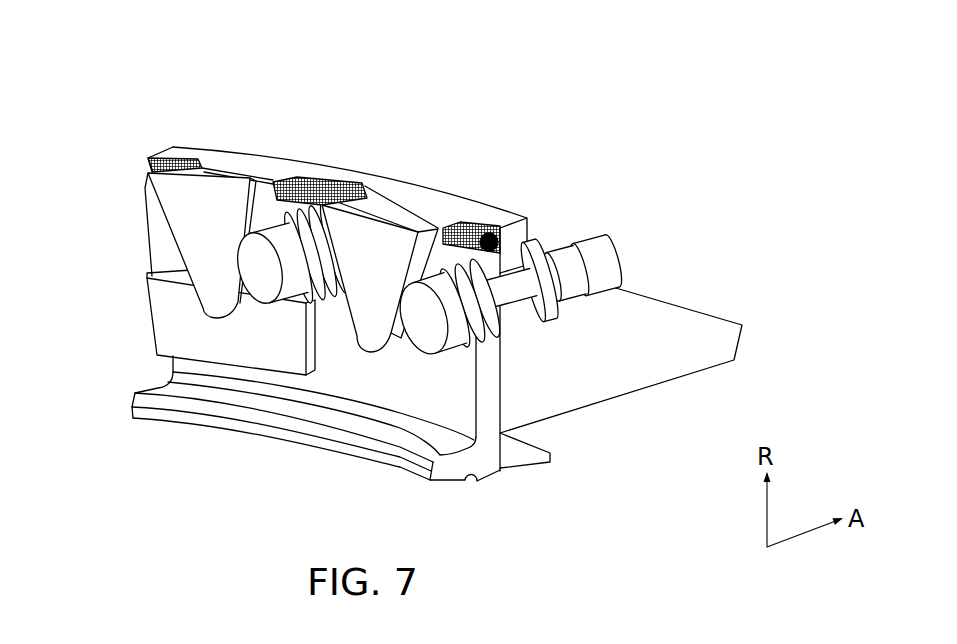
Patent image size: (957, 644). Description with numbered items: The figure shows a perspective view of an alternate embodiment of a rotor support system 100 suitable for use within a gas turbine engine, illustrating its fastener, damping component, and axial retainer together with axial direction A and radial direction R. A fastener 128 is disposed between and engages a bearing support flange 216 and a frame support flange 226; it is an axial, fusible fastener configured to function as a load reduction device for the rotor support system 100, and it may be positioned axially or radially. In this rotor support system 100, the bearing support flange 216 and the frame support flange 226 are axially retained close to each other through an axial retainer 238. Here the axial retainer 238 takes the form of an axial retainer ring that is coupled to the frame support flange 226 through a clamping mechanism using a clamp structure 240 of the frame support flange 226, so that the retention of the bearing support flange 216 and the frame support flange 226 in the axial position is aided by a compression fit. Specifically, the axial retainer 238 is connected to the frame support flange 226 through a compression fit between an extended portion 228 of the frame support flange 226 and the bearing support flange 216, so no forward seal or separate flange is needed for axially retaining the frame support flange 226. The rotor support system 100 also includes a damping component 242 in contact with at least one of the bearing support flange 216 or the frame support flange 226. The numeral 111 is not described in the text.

The rotor support system 100 is at (660, 62).
The blade track / shroud segment 111 is at (382, 189).
The fastener 128 is at (427, 332).
The bearing support flange 216 is at (477, 465).
The frame support flange 226 is at (738, 340).
The extended portion 228 is at (332, 176).
The axial retainer 238 is at (170, 312).
The clamp structure 240 is at (244, 155).
The damping component 242 is at (500, 246).